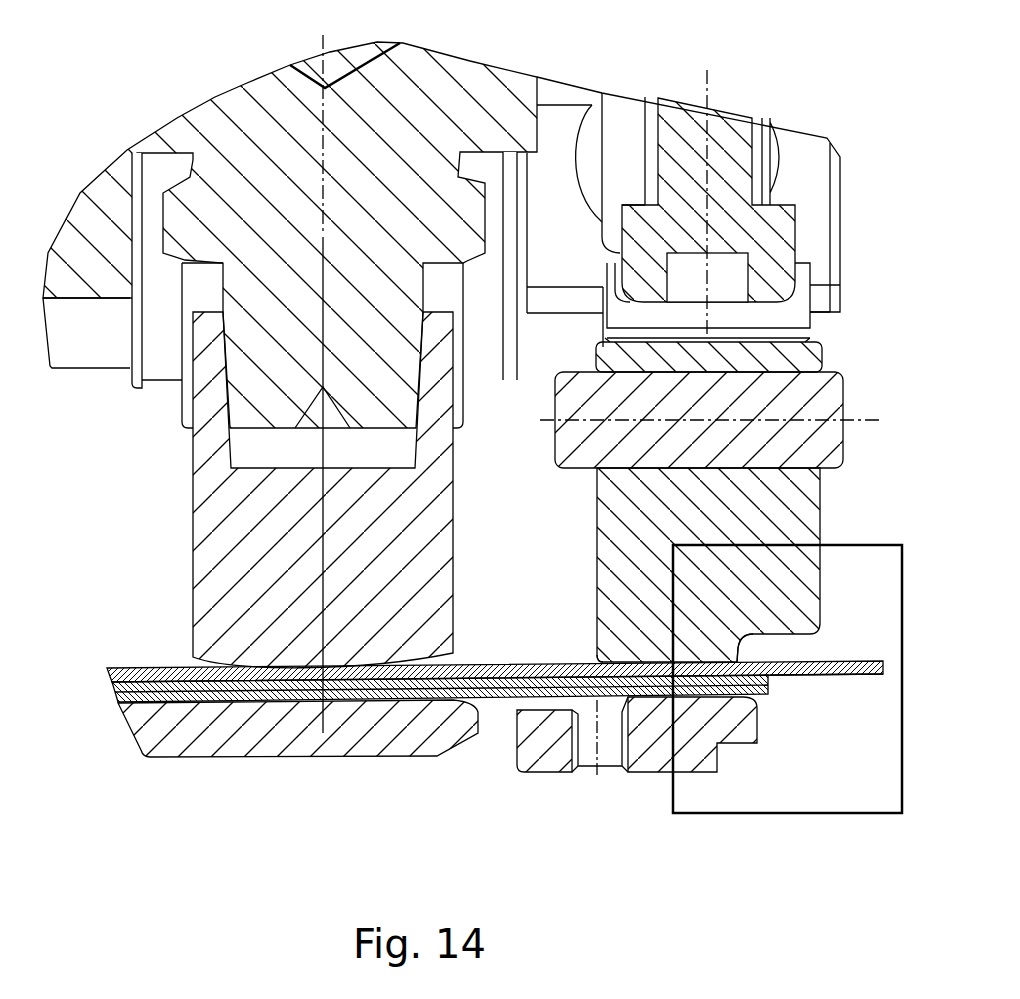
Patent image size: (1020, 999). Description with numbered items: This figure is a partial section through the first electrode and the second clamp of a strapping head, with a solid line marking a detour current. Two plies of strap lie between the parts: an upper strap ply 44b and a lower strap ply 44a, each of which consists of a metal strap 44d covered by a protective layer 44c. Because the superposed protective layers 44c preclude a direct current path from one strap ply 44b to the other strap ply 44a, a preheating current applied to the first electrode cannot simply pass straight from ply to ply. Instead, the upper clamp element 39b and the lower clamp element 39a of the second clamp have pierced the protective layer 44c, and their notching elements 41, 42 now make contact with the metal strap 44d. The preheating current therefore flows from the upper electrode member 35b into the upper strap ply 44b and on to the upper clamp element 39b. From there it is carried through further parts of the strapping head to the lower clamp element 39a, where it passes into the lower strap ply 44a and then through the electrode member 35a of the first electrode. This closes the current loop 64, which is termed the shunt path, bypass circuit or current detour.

The electrode member 35a is at (237, 758).
The upper electrode member 35b is at (193, 562).
The lower clamp element 39a is at (548, 772).
The upper clamp element 39b is at (620, 530).
The notching element 41 is at (515, 767).
The notching element 42 is at (590, 658).
The lower strap ply 44a is at (841, 683).
The upper strap ply 44b is at (455, 752).
The protective layer 44c is at (480, 667).
The metal strap 44d is at (110, 679).
The current loop 64 is at (855, 545).